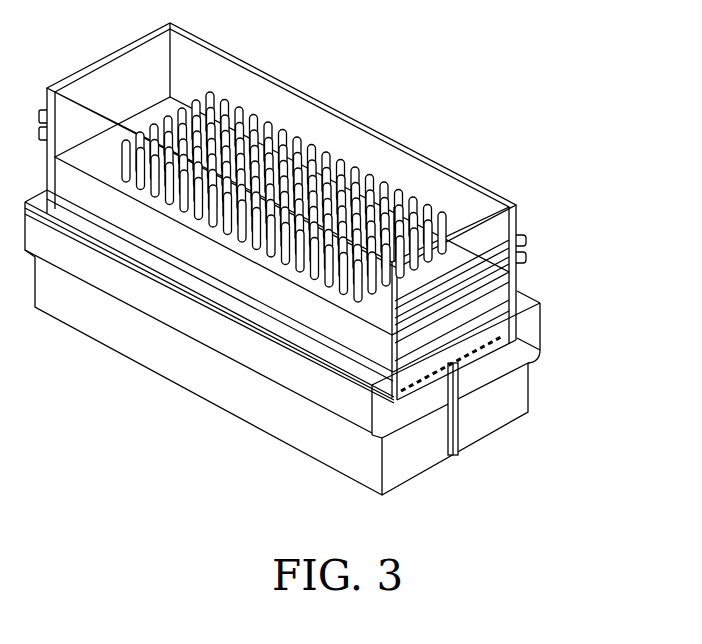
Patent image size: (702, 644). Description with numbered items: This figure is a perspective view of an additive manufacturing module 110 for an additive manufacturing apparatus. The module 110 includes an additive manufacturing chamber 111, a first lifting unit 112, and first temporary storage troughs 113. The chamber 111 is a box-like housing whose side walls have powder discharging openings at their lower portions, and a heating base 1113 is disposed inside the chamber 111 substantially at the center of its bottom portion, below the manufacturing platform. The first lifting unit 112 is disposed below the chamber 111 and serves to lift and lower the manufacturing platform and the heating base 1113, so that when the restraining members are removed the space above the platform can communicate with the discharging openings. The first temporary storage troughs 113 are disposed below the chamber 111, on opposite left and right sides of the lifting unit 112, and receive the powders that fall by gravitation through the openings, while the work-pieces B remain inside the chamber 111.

The additive manufacturing module 110 is at (405, 16).
The additive manufacturing chamber 111 is at (521, 201).
The heating base 1113 is at (507, 325).
The first lifting unit 112 is at (466, 442).
The first temporary storage trough 113 is at (279, 447).
The work-pieces B is at (396, 175).